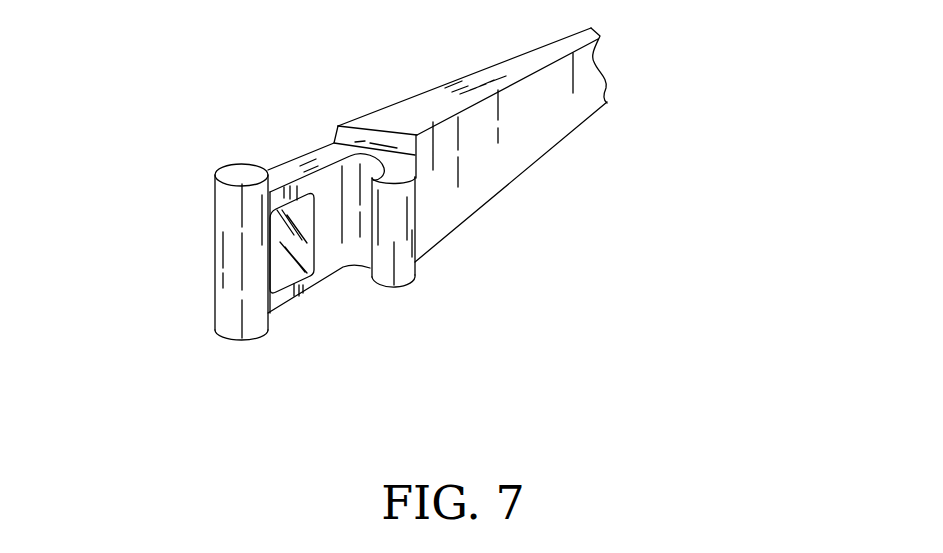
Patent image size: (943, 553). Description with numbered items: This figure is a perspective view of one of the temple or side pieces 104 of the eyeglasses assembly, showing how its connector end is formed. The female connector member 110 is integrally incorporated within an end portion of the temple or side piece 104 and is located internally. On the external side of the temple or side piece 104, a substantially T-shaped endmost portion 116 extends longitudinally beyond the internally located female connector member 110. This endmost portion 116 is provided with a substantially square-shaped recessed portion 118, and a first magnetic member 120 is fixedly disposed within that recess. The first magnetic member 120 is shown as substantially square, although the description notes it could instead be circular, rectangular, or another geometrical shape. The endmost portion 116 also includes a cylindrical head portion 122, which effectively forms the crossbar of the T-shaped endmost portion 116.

The temple or side piece 104 is at (520, 123).
The female connector member 110 is at (392, 225).
The T-shaped endmost portion 116 is at (232, 248).
The square-shaped recessed portion 118 is at (298, 293).
The first magnetic member 120 is at (293, 237).
The cylindrical head portion 122 is at (235, 342).